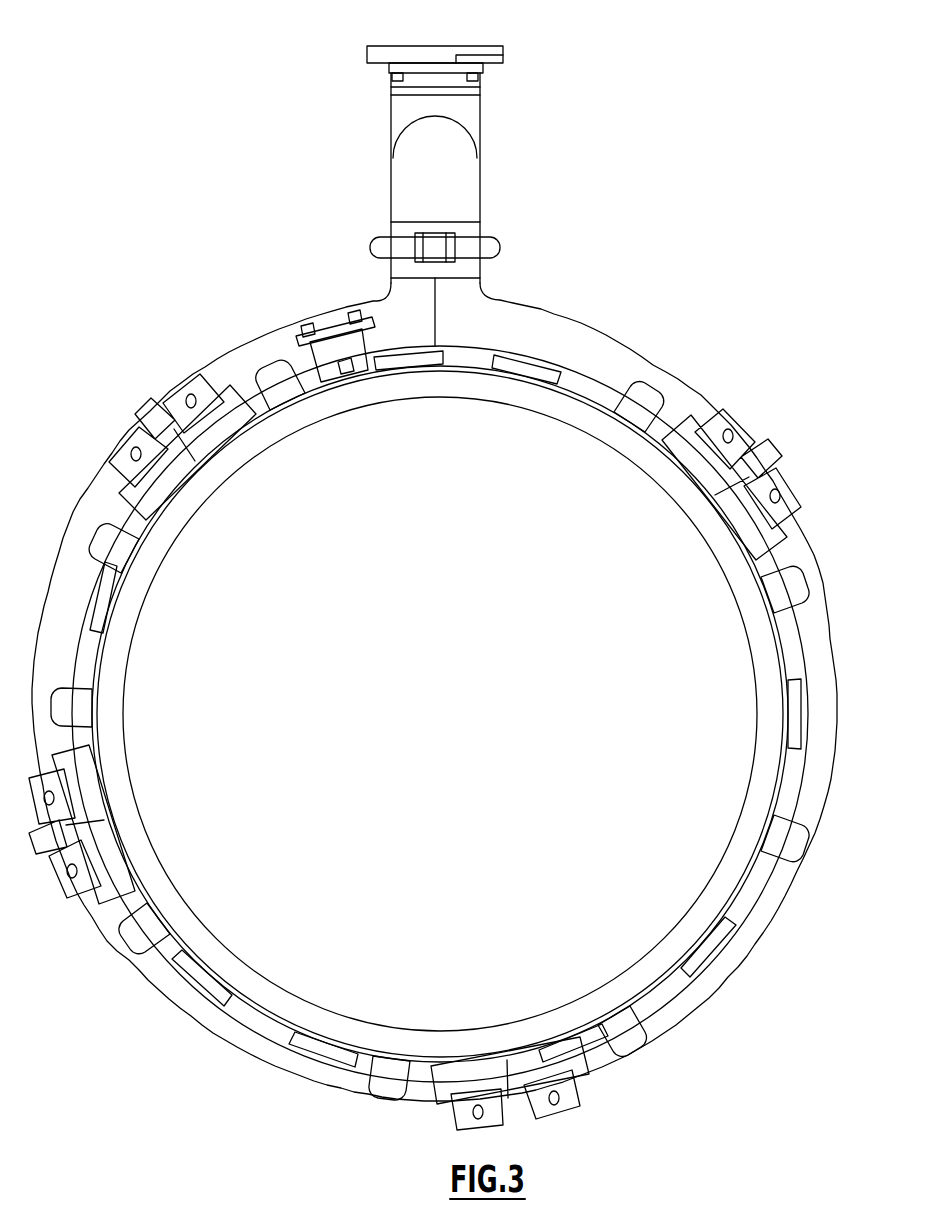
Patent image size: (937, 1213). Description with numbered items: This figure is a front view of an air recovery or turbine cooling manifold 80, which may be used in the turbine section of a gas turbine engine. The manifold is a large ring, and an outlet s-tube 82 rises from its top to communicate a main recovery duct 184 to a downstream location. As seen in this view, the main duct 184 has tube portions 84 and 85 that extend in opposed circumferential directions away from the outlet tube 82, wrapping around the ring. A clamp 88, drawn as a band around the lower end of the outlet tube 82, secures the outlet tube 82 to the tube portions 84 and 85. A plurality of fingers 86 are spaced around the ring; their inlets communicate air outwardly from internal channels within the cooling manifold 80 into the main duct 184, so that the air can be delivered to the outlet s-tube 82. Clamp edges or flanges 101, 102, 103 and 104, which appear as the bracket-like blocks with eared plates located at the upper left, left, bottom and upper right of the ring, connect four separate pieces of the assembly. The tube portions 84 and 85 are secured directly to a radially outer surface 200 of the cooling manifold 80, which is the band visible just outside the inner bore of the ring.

The air recovery or turbine cooling manifold 80 is at (823, 517).
The outlet s-tube 82 is at (412, 163).
The tube portion 84 is at (500, 313).
The tube portion 85 is at (340, 311).
The fingers 86 is at (653, 396).
The clamp 88 is at (470, 239).
The clamp edge or flange 101 is at (165, 478).
The clamp edge or flange 102 is at (90, 795).
The clamp edge or flange 103 is at (487, 1075).
The clamp edge or flange 104 is at (737, 507).
The main recovery duct 184 is at (655, 168).
The radially outer surface 200 is at (467, 355).